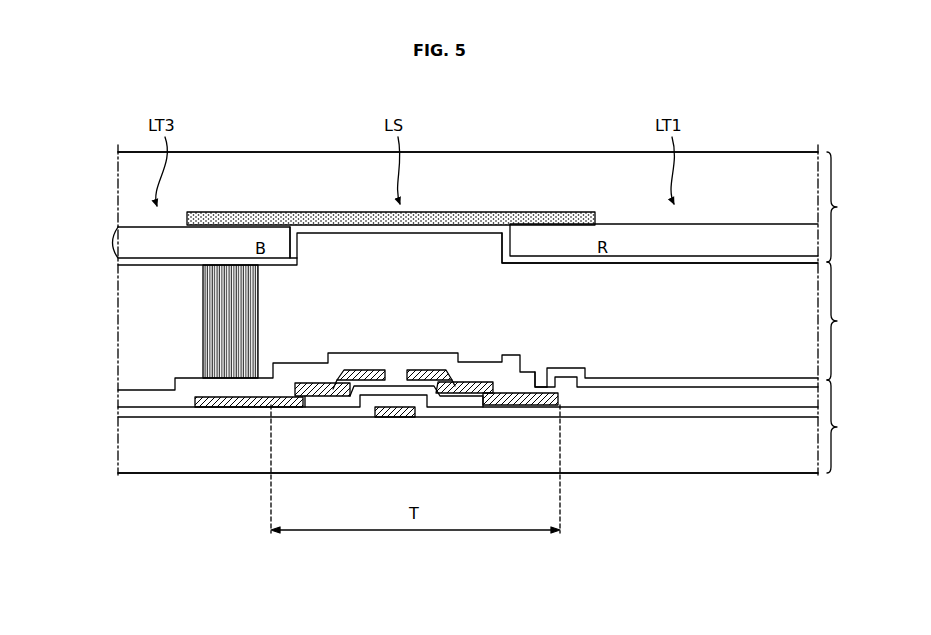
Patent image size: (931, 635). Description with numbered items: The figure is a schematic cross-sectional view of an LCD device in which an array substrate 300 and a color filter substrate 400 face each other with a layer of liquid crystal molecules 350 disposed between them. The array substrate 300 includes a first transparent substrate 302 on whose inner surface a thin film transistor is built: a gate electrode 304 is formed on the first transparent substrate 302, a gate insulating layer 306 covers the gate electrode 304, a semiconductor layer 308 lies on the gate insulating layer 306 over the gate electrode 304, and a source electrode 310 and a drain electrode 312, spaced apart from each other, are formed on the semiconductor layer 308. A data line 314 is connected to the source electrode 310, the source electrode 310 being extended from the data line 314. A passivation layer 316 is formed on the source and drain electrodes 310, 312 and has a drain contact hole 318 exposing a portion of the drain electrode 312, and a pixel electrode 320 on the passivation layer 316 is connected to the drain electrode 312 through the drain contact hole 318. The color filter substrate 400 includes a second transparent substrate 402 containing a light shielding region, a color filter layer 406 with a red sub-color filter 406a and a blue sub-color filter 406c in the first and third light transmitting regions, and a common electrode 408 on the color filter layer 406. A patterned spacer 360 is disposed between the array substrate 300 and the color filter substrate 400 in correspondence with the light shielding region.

The second transparent substrate 402 is at (800, 188).
The color filter substrate 400 is at (853, 207).
The common electrode 408 is at (754, 263).
The color filter layer 406 is at (110, 247).
The blue sub-color filter 406c is at (282, 260).
The red sub-color filter 406a is at (650, 258).
The patterned spacer 360 is at (215, 322).
The layer of liquid crystal molecules 350 is at (853, 321).
The pixel electrode 320 is at (683, 378).
The passivation layer 316 is at (472, 362).
The drain contact hole 318 is at (541, 356).
The source electrode 310 is at (365, 370).
The drain electrode 312 is at (427, 370).
The semiconductor layer 308 is at (333, 397).
The gate insulating layer 306 is at (655, 418).
The gate electrode 304 is at (390, 418).
The data line 314 is at (216, 406).
The first transparent substrate 302 is at (802, 448).
The array substrate 300 is at (853, 426).